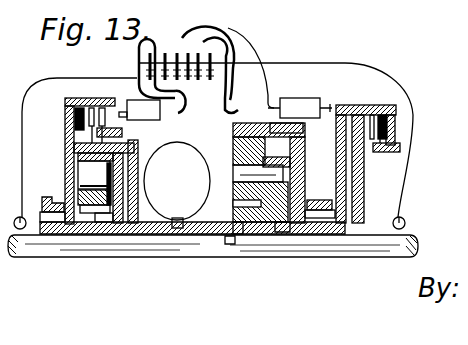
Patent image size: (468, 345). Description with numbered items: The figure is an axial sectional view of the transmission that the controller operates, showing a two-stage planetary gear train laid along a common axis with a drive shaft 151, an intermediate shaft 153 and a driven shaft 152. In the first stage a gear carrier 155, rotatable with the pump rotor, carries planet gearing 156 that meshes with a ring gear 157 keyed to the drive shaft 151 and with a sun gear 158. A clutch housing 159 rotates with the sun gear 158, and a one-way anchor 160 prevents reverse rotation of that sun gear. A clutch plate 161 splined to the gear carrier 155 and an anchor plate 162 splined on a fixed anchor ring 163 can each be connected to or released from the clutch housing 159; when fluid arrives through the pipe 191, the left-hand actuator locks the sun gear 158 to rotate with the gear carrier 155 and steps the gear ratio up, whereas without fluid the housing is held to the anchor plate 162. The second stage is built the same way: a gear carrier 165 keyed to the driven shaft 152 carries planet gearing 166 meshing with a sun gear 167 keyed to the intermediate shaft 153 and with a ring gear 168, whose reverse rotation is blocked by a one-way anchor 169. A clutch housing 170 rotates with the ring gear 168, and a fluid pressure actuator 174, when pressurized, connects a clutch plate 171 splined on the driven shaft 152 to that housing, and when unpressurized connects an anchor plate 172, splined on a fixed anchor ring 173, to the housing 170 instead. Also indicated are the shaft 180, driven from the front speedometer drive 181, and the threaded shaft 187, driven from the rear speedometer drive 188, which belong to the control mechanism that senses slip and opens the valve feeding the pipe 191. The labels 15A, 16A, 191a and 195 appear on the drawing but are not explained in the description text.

The ball 15A is at (147, 190).
The coil contacts 16A is at (180, 78).
The drive shaft 151 is at (90, 250).
The driven shaft 152 is at (357, 254).
The intermediate shaft 153 is at (230, 254).
The gear carrier 155 is at (157, 139).
The planet gearing 156 is at (76, 170).
The ring gear 157 is at (147, 172).
The sun gear 158 is at (100, 224).
The clutch housing 159 is at (73, 104).
The one-way anchor 160 is at (53, 234).
The clutch plate 161 is at (77, 127).
The anchor plate 162 is at (128, 96).
The fixed anchor ring 163 is at (165, 132).
The gear carrier 165 is at (283, 230).
The planet gearing 166 is at (237, 128).
The sun gear 167 is at (227, 230).
The ring gear 168 is at (263, 123).
The one-way anchor 169 is at (333, 195).
The clutch housing 170 is at (367, 100).
The clutch plate 171 is at (364, 172).
The anchor plate 172 is at (392, 122).
The fixed anchor ring 173 is at (395, 150).
The fluid pressure actuator 174 is at (303, 107).
The shaft 180 is at (89, 98).
The front speedometer drive 181 is at (34, 217).
The threaded shaft 187 is at (343, 64).
The rear speedometer drive 188 is at (405, 226).
The pipe 191 is at (139, 58).
The tube end 191a is at (222, 82).
The pipe 195 is at (250, 32).